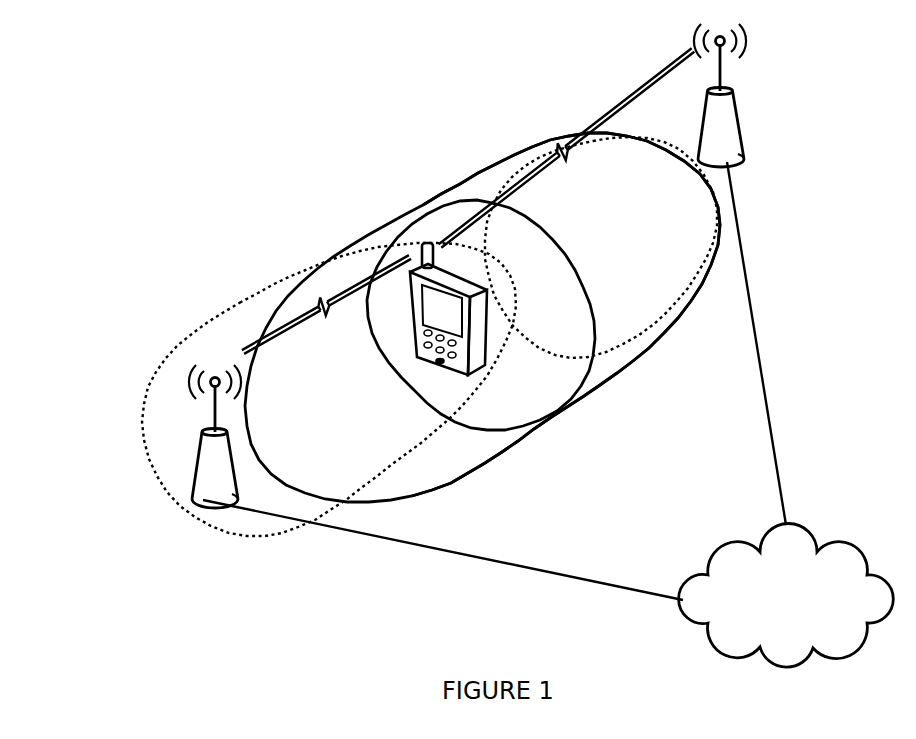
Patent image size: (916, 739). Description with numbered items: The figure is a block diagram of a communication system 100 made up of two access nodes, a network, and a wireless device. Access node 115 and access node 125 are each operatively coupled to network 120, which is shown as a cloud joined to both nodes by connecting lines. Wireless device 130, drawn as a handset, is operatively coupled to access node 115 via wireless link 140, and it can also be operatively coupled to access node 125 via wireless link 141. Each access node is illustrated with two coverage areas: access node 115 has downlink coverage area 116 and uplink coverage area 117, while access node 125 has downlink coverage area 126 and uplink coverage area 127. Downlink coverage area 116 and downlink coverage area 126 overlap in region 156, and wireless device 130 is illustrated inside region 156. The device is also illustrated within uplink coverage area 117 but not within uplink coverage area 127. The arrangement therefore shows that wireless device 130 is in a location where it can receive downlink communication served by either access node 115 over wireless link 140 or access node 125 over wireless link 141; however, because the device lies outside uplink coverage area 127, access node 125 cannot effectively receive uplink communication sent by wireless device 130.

The communication system 100 is at (106, 51).
The access node 115 is at (200, 500).
The downlink coverage area 116 is at (437, 492).
The uplink coverage area 117 is at (420, 443).
The network 120 is at (807, 627).
The access node 125 is at (747, 162).
The downlink coverage area 126 is at (632, 368).
The uplink coverage area 127 is at (652, 322).
The wireless device 130 is at (475, 355).
The wireless link 140 is at (322, 302).
The wireless link 141 is at (638, 92).
The region 156 is at (578, 397).